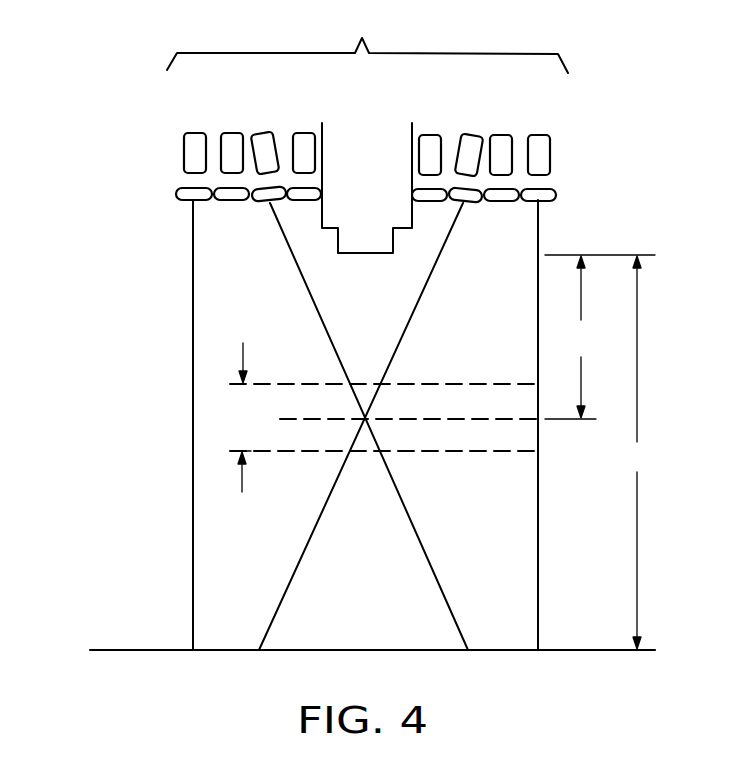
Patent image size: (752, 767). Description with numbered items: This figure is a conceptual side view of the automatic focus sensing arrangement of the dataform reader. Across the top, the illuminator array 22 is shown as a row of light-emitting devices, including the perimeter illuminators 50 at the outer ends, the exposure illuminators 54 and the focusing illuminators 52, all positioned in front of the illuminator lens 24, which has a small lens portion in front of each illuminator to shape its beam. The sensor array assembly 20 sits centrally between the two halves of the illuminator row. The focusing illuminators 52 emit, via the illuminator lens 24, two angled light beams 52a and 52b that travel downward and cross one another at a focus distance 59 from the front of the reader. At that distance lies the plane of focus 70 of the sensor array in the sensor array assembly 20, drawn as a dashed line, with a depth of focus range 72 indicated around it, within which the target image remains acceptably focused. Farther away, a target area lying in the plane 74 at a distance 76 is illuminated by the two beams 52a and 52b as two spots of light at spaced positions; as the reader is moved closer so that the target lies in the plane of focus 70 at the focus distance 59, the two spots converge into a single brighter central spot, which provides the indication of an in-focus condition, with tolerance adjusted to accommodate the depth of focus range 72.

The sensor array assembly 20 is at (389, 183).
The illuminator array 22 is at (367, 39).
The illuminator lens 24 is at (175, 193).
The perimeter illuminators 50 is at (183, 157).
The focusing illuminators 52 is at (262, 131).
The angled light beam 52a is at (303, 283).
The angled light beam 52b is at (430, 280).
The exposure illuminators 54 is at (234, 133).
The focus distance 59 is at (600, 337).
The plane of focus 70 is at (298, 417).
The depth of focus range 72 is at (245, 433).
The target area plane 74 is at (127, 646).
The target distance 76 is at (636, 452).